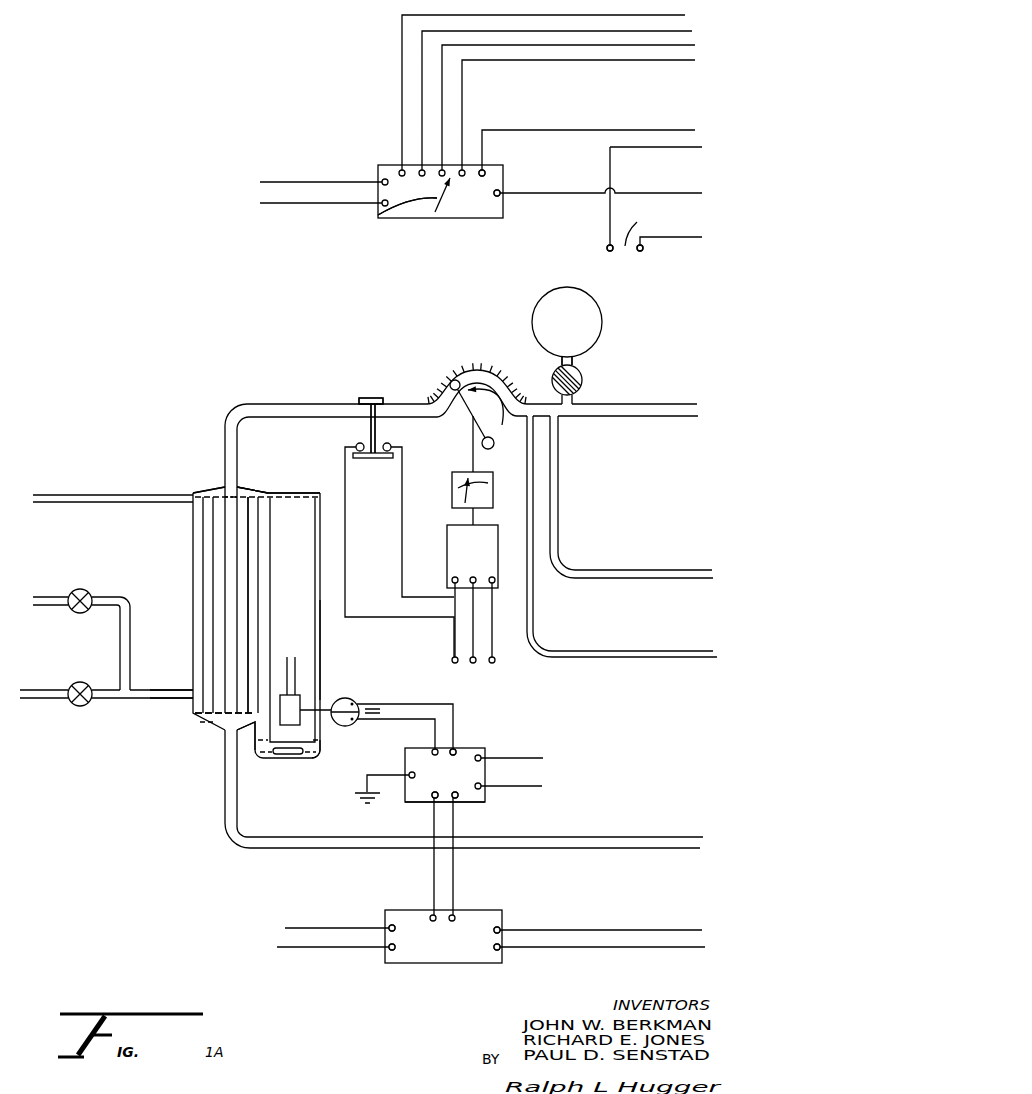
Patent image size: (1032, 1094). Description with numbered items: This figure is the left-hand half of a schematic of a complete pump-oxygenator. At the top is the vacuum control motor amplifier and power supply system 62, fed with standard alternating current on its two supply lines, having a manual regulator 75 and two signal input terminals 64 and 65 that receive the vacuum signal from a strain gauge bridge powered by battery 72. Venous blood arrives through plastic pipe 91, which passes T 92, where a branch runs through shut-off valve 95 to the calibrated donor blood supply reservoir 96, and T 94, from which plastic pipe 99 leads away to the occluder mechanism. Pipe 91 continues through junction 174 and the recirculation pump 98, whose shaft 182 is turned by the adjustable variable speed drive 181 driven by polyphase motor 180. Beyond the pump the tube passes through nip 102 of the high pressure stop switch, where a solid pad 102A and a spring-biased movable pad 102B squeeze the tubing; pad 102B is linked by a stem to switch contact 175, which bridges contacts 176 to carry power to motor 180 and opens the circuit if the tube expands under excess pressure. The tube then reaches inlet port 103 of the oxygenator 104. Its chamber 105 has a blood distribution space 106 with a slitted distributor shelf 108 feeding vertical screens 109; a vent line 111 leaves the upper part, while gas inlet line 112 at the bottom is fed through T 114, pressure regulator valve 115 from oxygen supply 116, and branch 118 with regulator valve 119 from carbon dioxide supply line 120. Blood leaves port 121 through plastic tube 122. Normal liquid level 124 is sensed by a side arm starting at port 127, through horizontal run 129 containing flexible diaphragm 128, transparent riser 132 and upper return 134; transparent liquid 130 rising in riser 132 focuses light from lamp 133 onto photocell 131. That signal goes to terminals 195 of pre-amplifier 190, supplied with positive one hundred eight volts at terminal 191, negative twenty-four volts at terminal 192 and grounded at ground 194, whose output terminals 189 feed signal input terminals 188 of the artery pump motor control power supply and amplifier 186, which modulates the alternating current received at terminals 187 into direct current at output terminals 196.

The motor control amplifier power supply system 62 is at (380, 159).
The signal input terminal 64 is at (485, 172).
The signal input terminal 65 is at (500, 192).
The battery 72 is at (633, 230).
The manual regulator 75 is at (380, 213).
The plastic pipe 91 is at (292, 403).
The T 92 is at (560, 419).
The T 94 is at (549, 401).
The shut-off valve 95 is at (582, 377).
The donor blood supply reservoir 96 is at (597, 306).
The recirculation pump 98 is at (457, 405).
The plastic pipe 99 is at (597, 580).
The nip 102 is at (370, 400).
The solid pad 102A is at (363, 397).
The movable pad 102B is at (366, 422).
The inlet port 103 is at (238, 453).
The oxygenator 104 is at (185, 547).
The chamber 105 is at (271, 594).
The blood distribution space 106 is at (223, 486).
The distributor shelf 108 is at (238, 498).
The screens 109 is at (249, 557).
The vent line 111 is at (38, 502).
The gas inlet line 112 is at (182, 700).
The T 114 is at (123, 703).
The pressure regulator valve 115 is at (75, 710).
The oxygen supply 116 is at (25, 698).
The branch 118 is at (118, 653).
The regulator valve 119 is at (77, 589).
The carbon dioxide supply line 120 is at (36, 606).
The port 121 is at (230, 740).
The plastic tube 122 is at (225, 803).
The liquid level 124 is at (223, 713).
The port 127 is at (256, 733).
The diaphragm 128 is at (284, 757).
The horizontal run 129 is at (312, 758).
The liquid 130 is at (322, 746).
The photocell 131 is at (352, 697).
The riser 132 is at (322, 648).
The light source 133 is at (292, 703).
The upper return 134 is at (270, 493).
The junction 174 is at (525, 418).
The switch contact 175 is at (375, 458).
The contacts 176 is at (384, 444).
The polyphase motor 180 is at (455, 552).
The adjustable variable speed drive 181 is at (453, 497).
The shaft 182 is at (474, 460).
The artery pump motor control power supply and amplifier 186 is at (482, 927).
The terminals 187 is at (390, 945).
The signal input terminals 188 is at (450, 916).
The terminals 189 is at (452, 796).
The pre-amplifier 190 is at (464, 808).
The terminal 191 is at (480, 757).
The terminal 192 is at (481, 789).
The ground 194 is at (412, 772).
The terminals 195 is at (455, 749).
The terminals 196 is at (499, 948).